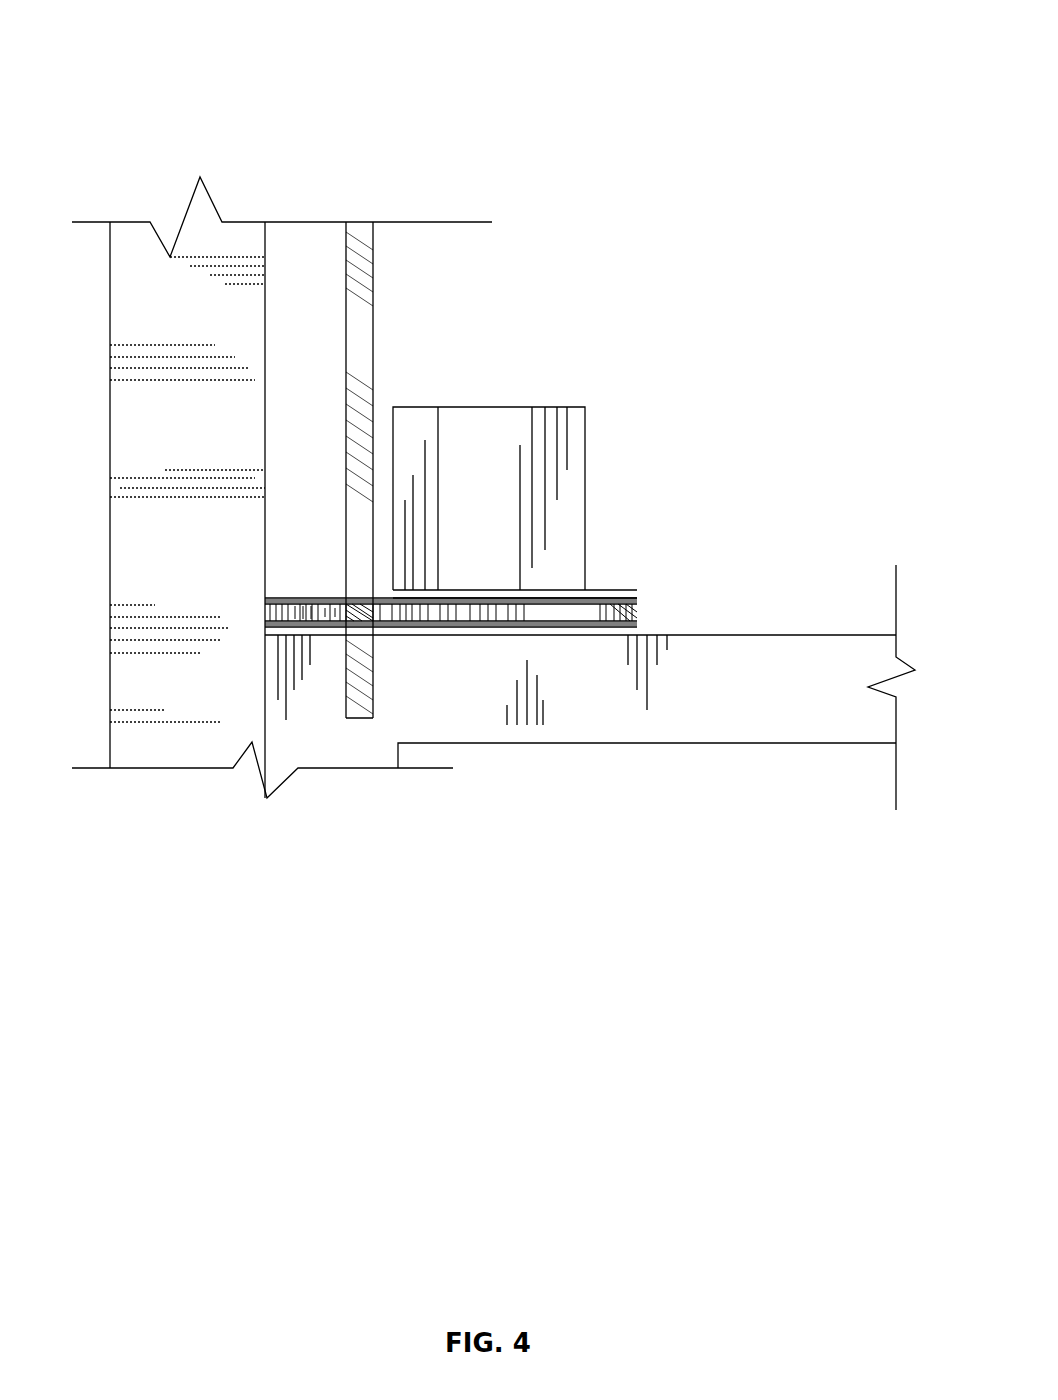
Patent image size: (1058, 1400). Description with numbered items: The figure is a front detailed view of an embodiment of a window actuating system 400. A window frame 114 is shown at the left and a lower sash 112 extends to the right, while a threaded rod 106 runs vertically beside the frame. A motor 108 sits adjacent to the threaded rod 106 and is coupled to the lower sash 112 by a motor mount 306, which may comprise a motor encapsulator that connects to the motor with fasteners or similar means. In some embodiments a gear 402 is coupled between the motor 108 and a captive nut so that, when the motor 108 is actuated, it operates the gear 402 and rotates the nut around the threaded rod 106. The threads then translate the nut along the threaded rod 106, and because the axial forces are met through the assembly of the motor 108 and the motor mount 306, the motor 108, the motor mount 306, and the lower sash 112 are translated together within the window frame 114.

The window actuating system 400 is at (868, 60).
The window frame 114 is at (130, 413).
The threaded rod 106 is at (358, 459).
The motor 108 is at (558, 462).
The lower sash 112 is at (716, 655).
The motor mount 306 is at (290, 597).
The gear 402 is at (300, 618).